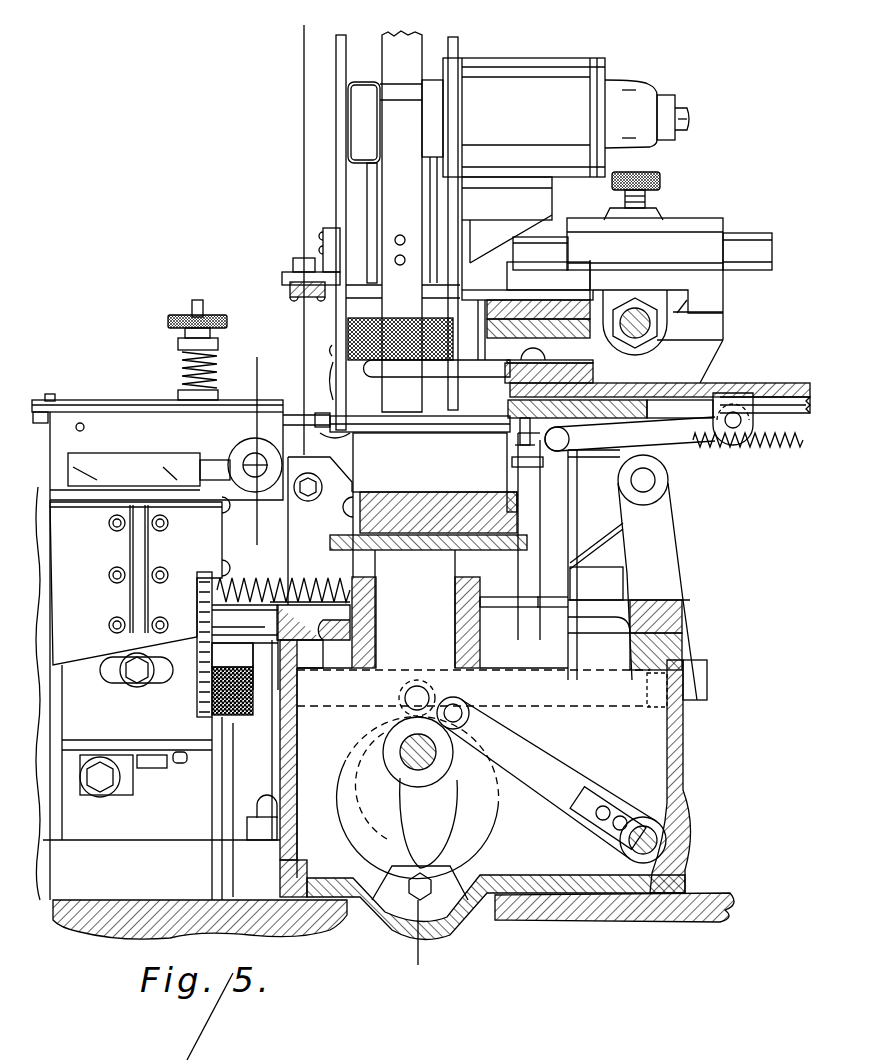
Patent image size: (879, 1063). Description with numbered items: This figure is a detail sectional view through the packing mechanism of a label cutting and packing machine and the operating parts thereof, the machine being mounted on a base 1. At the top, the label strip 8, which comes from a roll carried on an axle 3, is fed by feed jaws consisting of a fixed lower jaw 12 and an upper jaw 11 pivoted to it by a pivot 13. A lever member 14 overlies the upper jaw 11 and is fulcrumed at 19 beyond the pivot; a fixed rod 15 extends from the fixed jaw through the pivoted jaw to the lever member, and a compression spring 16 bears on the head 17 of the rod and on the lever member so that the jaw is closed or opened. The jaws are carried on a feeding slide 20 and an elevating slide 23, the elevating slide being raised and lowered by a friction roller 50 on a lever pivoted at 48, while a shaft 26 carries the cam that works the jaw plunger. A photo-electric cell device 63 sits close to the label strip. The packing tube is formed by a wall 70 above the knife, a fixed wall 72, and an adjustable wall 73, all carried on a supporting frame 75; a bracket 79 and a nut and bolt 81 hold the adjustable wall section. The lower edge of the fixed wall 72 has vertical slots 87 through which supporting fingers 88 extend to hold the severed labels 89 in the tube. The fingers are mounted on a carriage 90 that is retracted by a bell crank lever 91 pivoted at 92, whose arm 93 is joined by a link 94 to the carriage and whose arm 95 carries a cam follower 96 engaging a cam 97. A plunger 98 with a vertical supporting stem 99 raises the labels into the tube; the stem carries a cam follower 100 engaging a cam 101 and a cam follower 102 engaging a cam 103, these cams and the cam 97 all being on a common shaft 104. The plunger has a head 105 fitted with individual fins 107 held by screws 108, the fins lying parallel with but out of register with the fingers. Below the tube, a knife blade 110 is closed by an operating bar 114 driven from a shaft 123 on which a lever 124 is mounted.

The base 1 is at (102, 913).
The axle 3 is at (296, 25).
The label strip 8 is at (262, 357).
The upper jaw 11 is at (292, 412).
The fixed lower jaw 12 is at (322, 434).
The pivot 13 is at (85, 427).
The lever member 14 is at (102, 398).
The fixed rod 15 is at (190, 306).
The compression spring 16 is at (183, 356).
The head 17 is at (168, 322).
The fulcrum 19 is at (52, 394).
The feeding slide 20 is at (118, 462).
The elevating slide 23 is at (202, 540).
The shaft 26 is at (249, 456).
The pivot 48 is at (180, 766).
The friction roller 50 is at (110, 792).
The photo-electric cell device 63 is at (367, 94).
The wall 70 is at (408, 44).
The fixed wall 72 is at (459, 45).
The wall 73 is at (337, 86).
The supporting frame 75 is at (298, 298).
The bracket 79 is at (290, 282).
The nut and bolt 81 is at (300, 258).
The vertical slots 87 is at (458, 378).
The supporting fingers 88 is at (395, 365).
The severed labels 89 is at (396, 335).
The carriage 90 is at (741, 383).
The bell crank lever 91 is at (572, 768).
The pivot 92 is at (652, 836).
The arm 93 is at (563, 507).
The link 94 is at (673, 441).
The arm 95 is at (543, 790).
The cam follower 96 is at (466, 706).
The cam 97 is at (410, 793).
The plunger 98 is at (427, 520).
The vertical supporting stem 99 is at (387, 660).
The cam follower 100 is at (420, 686).
The cam 101 is at (360, 760).
The cam follower 102 is at (448, 930).
The cam 103 is at (503, 823).
The common shaft 104 is at (432, 756).
The head 105 is at (452, 492).
The fins 107 is at (373, 482).
The screws 108 is at (352, 510).
The blade 110 is at (328, 370).
The operating bar 114 is at (277, 693).
The shaft 123 is at (650, 487).
The lever 124 is at (633, 583).